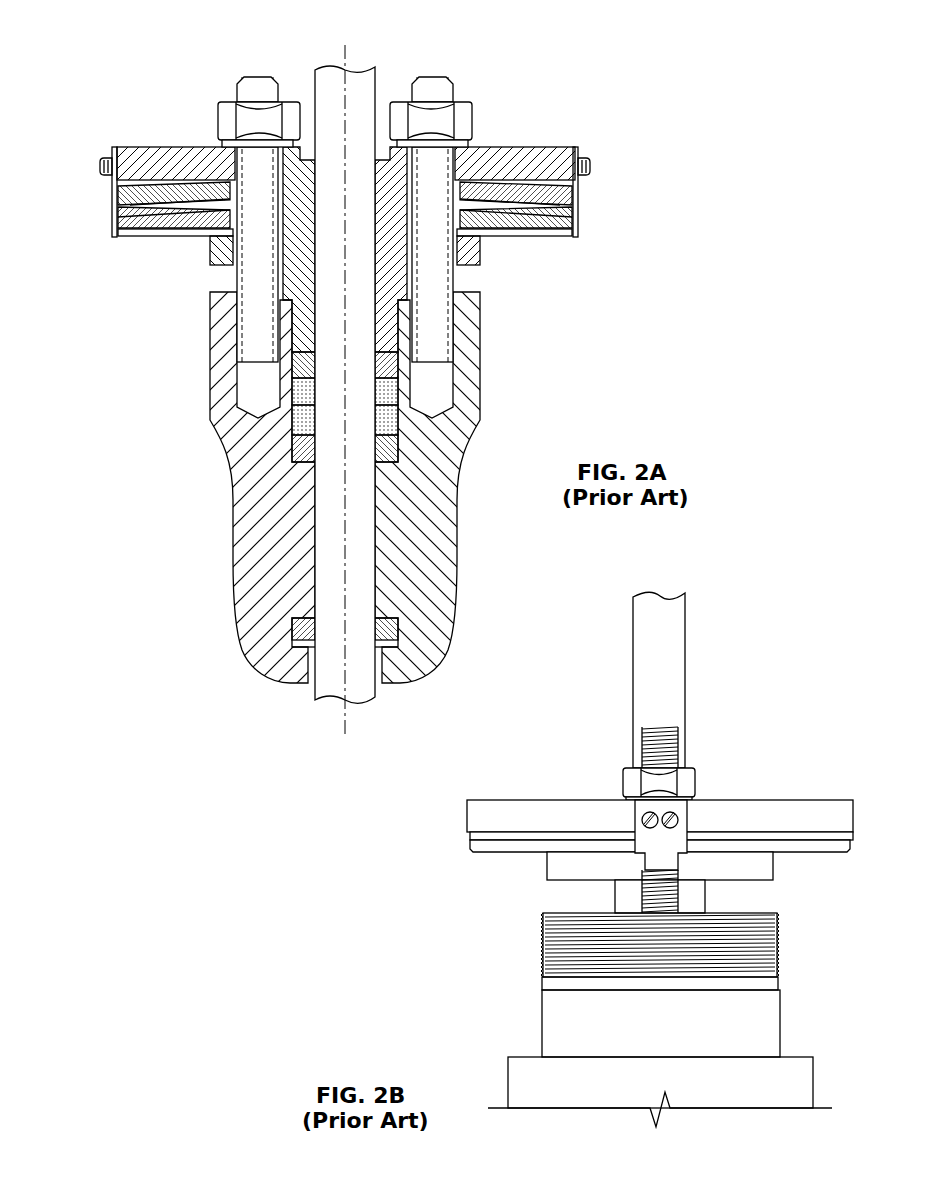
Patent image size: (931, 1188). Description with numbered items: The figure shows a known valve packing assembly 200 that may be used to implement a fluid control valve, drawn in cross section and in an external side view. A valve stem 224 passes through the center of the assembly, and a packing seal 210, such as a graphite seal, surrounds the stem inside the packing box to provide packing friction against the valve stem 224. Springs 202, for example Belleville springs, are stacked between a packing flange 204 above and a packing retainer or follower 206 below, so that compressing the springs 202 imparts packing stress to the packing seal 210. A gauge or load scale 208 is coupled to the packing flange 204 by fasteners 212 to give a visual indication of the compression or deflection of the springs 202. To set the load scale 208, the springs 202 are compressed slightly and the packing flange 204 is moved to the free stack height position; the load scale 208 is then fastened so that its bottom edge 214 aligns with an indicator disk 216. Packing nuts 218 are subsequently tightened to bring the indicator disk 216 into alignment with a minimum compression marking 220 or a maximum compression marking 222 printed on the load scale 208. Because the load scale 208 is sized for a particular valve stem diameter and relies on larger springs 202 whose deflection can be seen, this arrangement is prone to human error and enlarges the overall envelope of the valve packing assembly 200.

In FIG. 2A, the valve packing assembly 200 is at (546, 73).
In FIG. 2A, the springs 202 is at (130, 212).
In FIG. 2A, the packing flange 204 is at (565, 152).
In FIG. 2B, the packing flange 204 is at (660, 826).
In FIG. 2A, the packing follower 206 is at (392, 248).
In FIG. 2A, the load scale 208 is at (110, 165).
In FIG. 2B, the load scale 208 is at (690, 835).
In FIG. 2A, the packing seal 210 is at (412, 448).
In FIG. 2B, the fasteners 212 is at (642, 815).
In FIG. 2A, the bottom edge 214 is at (578, 235).
In FIG. 2B, the bottom edge 214 is at (678, 898).
In FIG. 2A, the indicator disk 216 is at (165, 237).
In FIG. 2A, the packing nuts 218 is at (218, 122).
In FIG. 2B, the packing nuts 218 is at (659, 784).
In FIG. 2B, the minimum compression marking 220 is at (645, 862).
In FIG. 2B, the maximum compression marking 222 is at (635, 850).
In FIG. 2A, the valve stem 224 is at (315, 88).
In FIG. 2B, the valve stem 224 is at (685, 620).